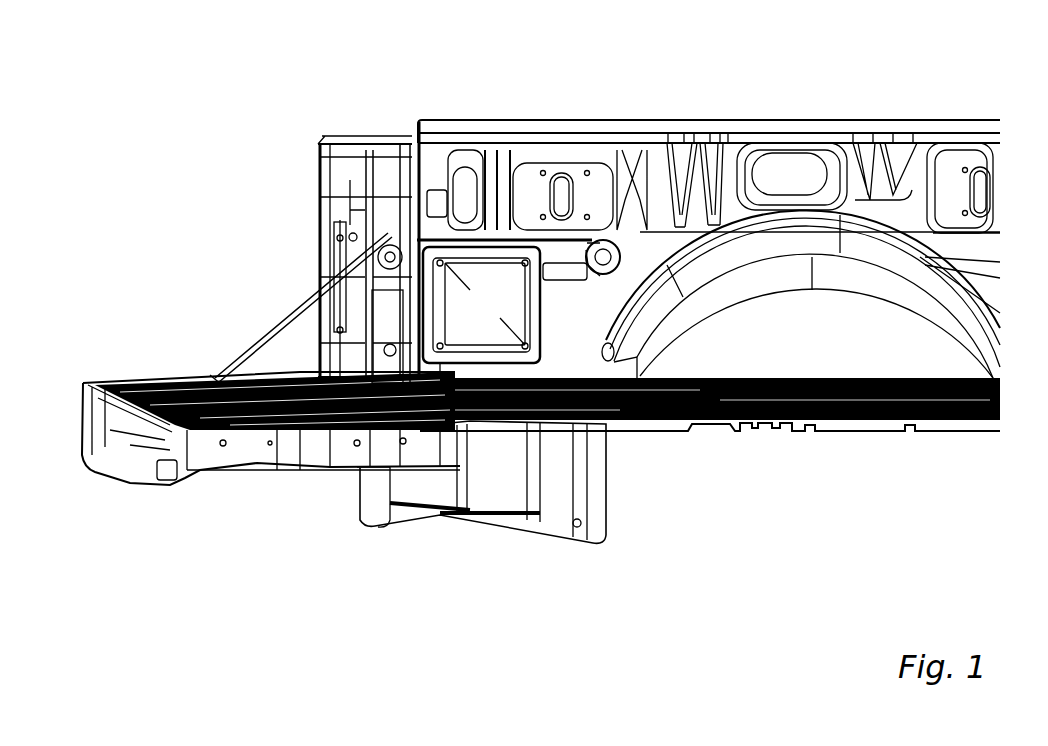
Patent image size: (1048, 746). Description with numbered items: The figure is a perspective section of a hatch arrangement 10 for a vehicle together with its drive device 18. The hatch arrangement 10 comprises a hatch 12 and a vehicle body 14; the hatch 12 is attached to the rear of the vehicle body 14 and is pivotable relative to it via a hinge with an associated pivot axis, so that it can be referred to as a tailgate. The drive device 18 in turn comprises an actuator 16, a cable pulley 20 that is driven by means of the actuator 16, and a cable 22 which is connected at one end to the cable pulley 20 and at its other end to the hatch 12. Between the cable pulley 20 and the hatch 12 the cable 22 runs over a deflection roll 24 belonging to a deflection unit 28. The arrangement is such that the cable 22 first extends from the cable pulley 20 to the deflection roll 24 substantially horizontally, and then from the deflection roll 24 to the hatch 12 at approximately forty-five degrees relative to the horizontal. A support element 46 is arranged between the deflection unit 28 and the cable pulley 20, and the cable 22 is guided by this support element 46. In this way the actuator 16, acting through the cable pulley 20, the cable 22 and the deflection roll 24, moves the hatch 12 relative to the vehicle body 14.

The hatch arrangement 10 is at (173, 116).
The hatch 12 is at (213, 457).
The vehicle body 14 is at (650, 187).
The actuator 16 is at (563, 305).
The drive device 18 is at (580, 308).
The cable pulley 20 is at (720, 168).
The cable 22 is at (289, 298).
The deflection roll 24 is at (333, 212).
The deflection unit 28 is at (405, 145).
The support element 46 is at (527, 175).